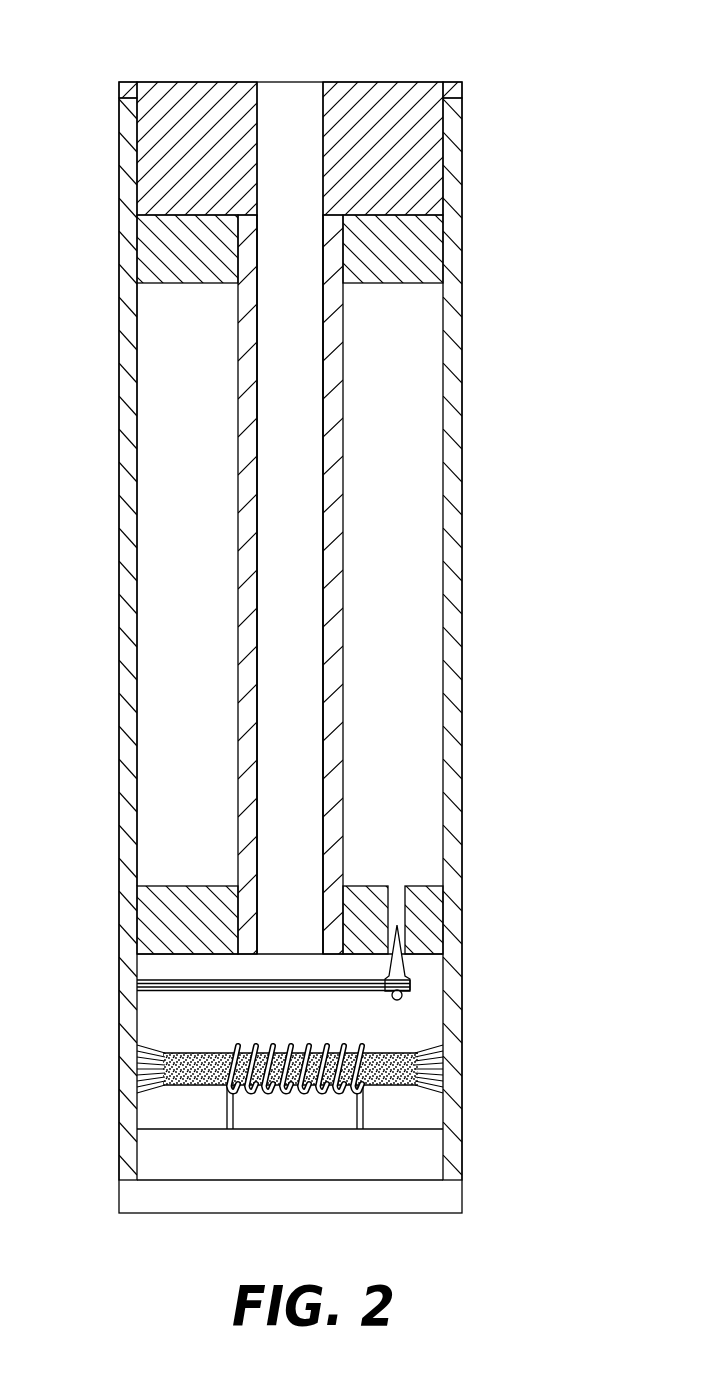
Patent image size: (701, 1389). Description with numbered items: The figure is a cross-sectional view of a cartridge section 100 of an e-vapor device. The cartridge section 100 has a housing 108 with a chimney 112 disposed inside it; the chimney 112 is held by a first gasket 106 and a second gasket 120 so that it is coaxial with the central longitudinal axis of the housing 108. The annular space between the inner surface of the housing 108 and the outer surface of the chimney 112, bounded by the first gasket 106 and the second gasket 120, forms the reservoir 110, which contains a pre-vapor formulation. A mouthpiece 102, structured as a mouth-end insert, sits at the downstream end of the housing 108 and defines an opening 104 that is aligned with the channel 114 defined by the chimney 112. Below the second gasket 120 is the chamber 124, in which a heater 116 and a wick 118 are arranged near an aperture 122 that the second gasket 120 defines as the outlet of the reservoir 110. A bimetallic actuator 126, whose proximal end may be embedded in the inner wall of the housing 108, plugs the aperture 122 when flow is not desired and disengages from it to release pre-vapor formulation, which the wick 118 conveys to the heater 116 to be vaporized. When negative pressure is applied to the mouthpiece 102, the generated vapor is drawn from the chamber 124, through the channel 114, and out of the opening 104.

The cartridge section 100 is at (83, 42).
The mouthpiece 102 is at (410, 95).
The opening 104 is at (282, 100).
The first gasket 106 is at (405, 247).
The housing 108 is at (447, 413).
The reservoir 110 is at (192, 543).
The chimney 112 is at (333, 613).
The channel 114 is at (276, 748).
The heater 116 is at (358, 1053).
The wick 118 is at (403, 1053).
The second gasket 120 is at (156, 905).
The aperture 122 is at (395, 910).
The chamber 124 is at (157, 967).
The bimetallic actuator 126 is at (212, 1002).